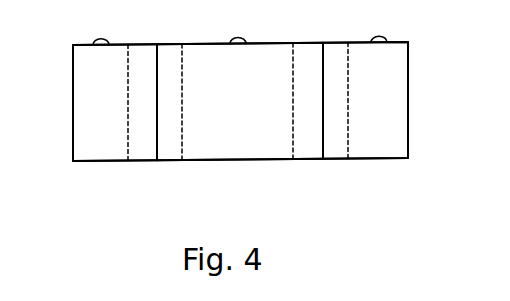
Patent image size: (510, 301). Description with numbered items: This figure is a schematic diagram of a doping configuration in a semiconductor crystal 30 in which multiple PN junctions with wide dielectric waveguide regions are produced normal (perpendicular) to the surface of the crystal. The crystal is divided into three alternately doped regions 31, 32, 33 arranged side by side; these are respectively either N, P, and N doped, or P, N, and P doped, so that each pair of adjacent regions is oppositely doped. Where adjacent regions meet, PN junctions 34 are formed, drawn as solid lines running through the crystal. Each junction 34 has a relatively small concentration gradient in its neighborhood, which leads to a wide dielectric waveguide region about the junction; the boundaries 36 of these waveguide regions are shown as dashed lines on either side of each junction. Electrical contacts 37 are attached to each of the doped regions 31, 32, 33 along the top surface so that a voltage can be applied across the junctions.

The semiconductor crystal 30 is at (73, 108).
The doped region 31 is at (88, 137).
The doped region 32 is at (234, 150).
The doped region 33 is at (388, 104).
The PN junction 34 is at (158, 50).
The dielectric waveguide region boundary 36 is at (127, 143).
The electrical contact 37 is at (103, 37).